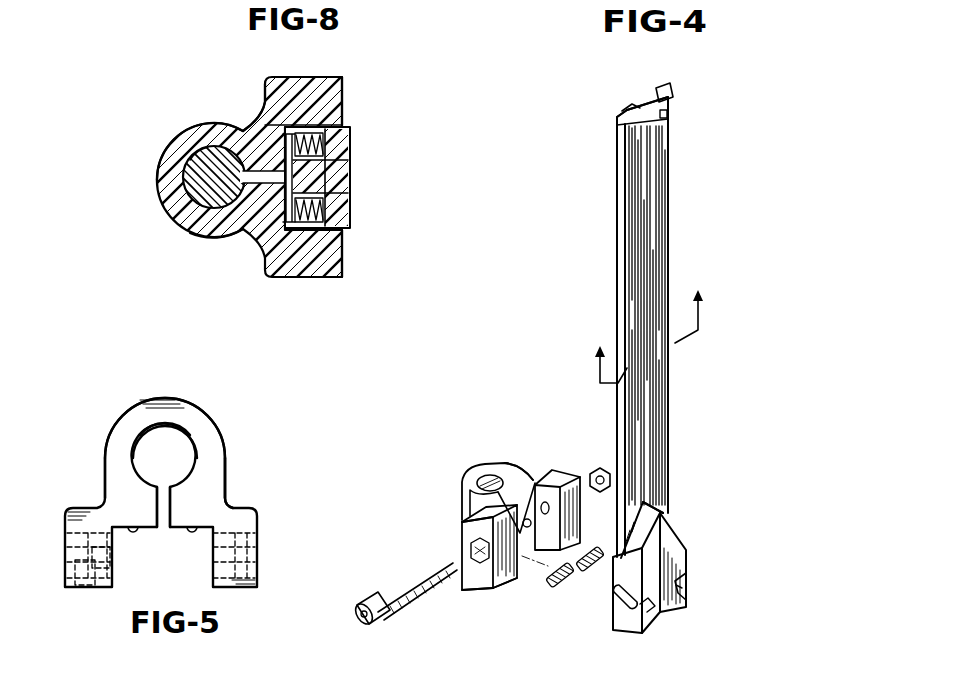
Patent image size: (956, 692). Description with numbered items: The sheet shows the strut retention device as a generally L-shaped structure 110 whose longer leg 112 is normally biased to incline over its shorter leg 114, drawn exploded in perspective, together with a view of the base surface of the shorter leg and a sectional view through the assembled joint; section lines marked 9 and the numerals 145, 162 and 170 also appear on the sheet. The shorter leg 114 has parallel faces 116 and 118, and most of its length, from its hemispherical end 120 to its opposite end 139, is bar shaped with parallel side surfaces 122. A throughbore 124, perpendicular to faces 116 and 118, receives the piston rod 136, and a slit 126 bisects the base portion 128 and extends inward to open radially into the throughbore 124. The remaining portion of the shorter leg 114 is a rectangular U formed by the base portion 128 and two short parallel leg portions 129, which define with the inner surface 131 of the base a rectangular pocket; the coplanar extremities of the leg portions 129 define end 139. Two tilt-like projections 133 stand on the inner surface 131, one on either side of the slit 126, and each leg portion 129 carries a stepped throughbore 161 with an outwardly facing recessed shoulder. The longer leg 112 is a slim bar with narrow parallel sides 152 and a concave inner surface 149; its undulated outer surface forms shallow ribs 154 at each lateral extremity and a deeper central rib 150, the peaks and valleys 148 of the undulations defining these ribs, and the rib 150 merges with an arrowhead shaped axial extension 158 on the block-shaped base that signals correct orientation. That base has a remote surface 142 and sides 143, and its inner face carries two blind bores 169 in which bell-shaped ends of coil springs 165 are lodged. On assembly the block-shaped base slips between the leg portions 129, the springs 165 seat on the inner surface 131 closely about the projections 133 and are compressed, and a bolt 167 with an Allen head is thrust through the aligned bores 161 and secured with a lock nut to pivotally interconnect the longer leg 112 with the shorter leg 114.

In FIG. 4, the section line 9- 9 is at (652, 316).
In FIG. 4, the generally L-shaped structure 110 is at (587, 437).
In FIG. 4, the longer leg 112 is at (642, 220).
In FIG. 8, the shorter leg 114 is at (165, 227).
In FIG. 4, the shorter leg 114 is at (460, 492).
In FIG. 5, the face 116 is at (120, 478).
In FIG. 4, the face 116 is at (470, 585).
In FIG. 4, the face 118 is at (524, 472).
In FIG. 8, the end 120 is at (158, 163).
In FIG. 5, the end 120 is at (177, 393).
In FIG. 4, the end 120 is at (463, 464).
In FIG. 8, the side surfaces 122 is at (218, 122).
In FIG. 5, the side surfaces 122 is at (108, 452).
In FIG. 4, the side surfaces 122 is at (465, 510).
In FIG. 8, the throughbore 124 is at (190, 182).
In FIG. 5, the throughbore 124 is at (153, 436).
In FIG. 4, the throughbore 124 is at (483, 472).
In FIG. 8, the slit 126 is at (265, 150).
In FIG. 5, the slit 126 is at (162, 503).
In FIG. 8, the base portion 128 is at (272, 140).
In FIG. 5, the base portion 128 is at (197, 507).
In FIG. 8, the leg portions 129 is at (330, 88).
In FIG. 5, the leg portions 129 is at (87, 537).
In FIG. 4, the leg portions 129 is at (466, 538).
In FIG. 5, the inner surface 131 is at (120, 530).
In FIG. 4, the inner surface 131 is at (521, 540).
In FIG. 8, the tilt-like projections 133 is at (283, 215).
In FIG. 5, the tilt-like projections 133 is at (192, 538).
In FIG. 4, the tilt-like projections 133 is at (540, 486).
In FIG. 8, the piston rod 136 is at (207, 128).
In FIG. 8, the end 139 is at (343, 100).
In FIG. 5, the end 139 is at (97, 583).
In FIG. 4, the end 139 is at (493, 585).
In FIG. 4, the remote surface 142 is at (673, 622).
In FIG. 4, the sides 143 is at (690, 597).
In FIG. 4, the notch 145 is at (682, 577).
In FIG. 4, the peaks and valleys 148 is at (677, 100).
In FIG. 4, the inner surface 149 is at (643, 103).
In FIG. 4, the rib 150 is at (668, 115).
In FIG. 4, the sides 152 is at (622, 180).
In FIG. 4, the ribs 154 is at (637, 157).
In FIG. 4, the arrowhead shaped axial extension 158 is at (662, 522).
In FIG. 5, the stepped throughbore 161 is at (82, 602).
In FIG. 4, the stepped throughbore 161 is at (582, 500).
In FIG. 4, the pin 162 is at (606, 580).
In FIG. 8, the coil spring 165 is at (335, 148).
In FIG. 4, the coil spring 165 is at (585, 570).
In FIG. 4, the bolt 167 is at (402, 582).
In FIG. 8, the blind bores 169 is at (353, 133).
In FIG. 4, the base 170 is at (472, 685).